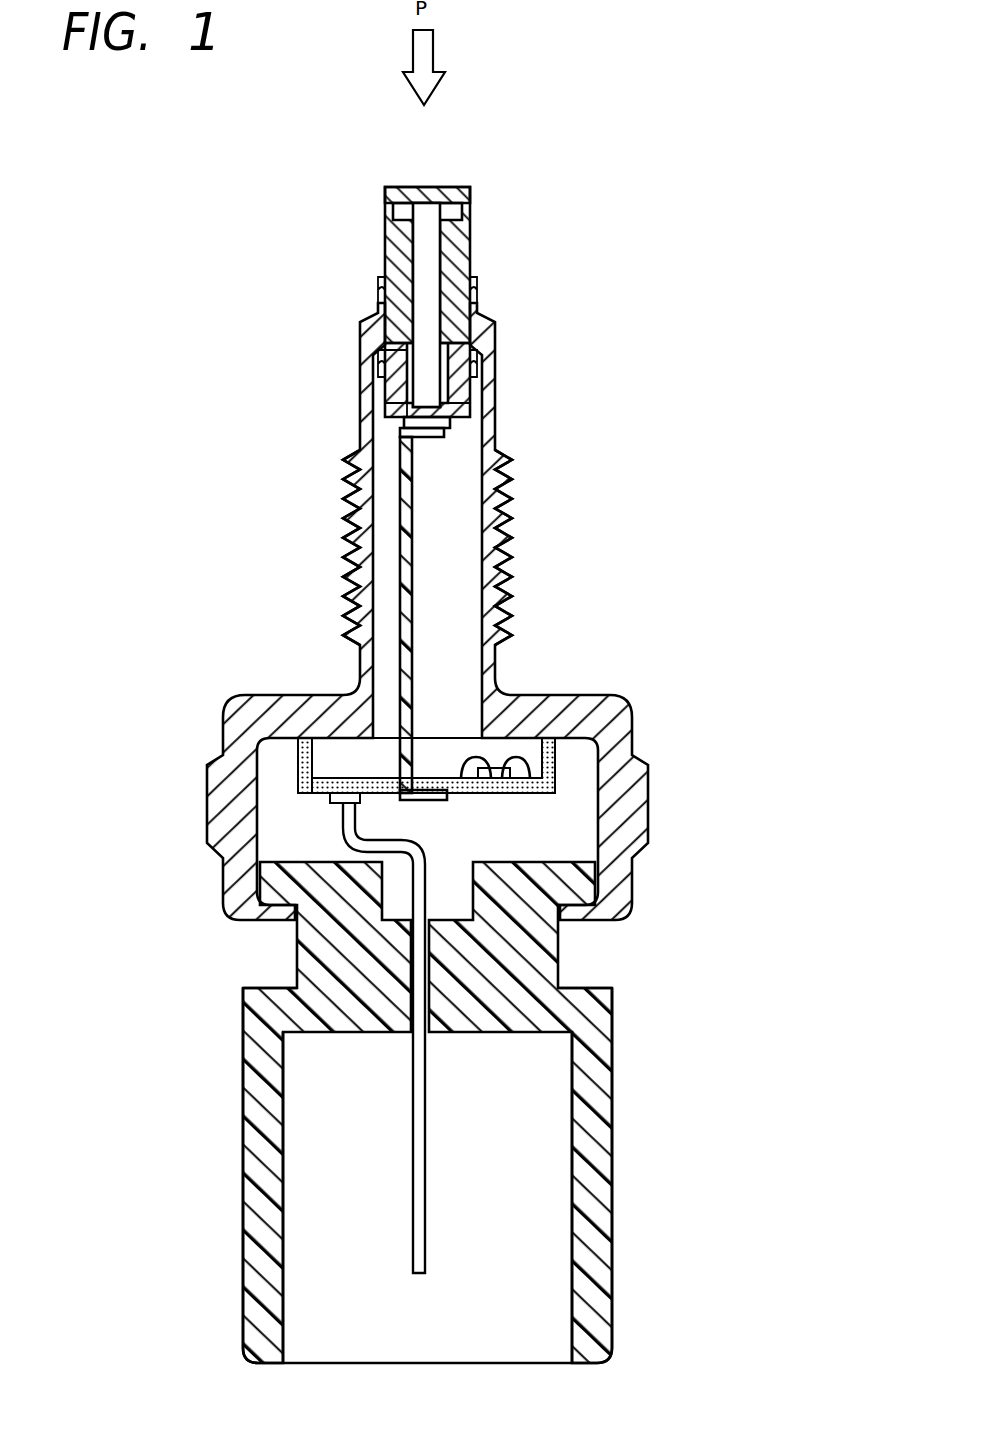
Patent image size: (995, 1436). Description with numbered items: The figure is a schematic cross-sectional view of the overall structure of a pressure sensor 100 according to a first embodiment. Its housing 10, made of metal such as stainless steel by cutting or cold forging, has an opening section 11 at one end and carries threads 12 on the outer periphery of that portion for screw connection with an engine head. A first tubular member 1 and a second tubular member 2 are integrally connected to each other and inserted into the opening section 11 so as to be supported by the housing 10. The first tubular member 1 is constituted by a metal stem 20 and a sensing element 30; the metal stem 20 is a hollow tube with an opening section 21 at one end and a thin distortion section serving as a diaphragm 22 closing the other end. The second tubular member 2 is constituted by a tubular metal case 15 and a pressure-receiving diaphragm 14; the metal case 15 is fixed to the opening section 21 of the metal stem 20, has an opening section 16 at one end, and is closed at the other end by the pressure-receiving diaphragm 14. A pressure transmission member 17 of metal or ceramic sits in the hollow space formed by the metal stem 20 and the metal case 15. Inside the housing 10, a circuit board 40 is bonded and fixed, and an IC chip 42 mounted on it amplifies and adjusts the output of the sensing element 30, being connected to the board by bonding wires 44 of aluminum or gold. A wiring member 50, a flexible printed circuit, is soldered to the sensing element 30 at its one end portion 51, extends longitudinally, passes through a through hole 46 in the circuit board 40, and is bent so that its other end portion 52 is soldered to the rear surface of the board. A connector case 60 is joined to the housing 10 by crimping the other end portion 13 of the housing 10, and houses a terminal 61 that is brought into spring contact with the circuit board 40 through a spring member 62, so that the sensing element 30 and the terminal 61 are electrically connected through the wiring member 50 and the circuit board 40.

The pressure sensor 100 is at (292, 183).
The first tubular member 1 is at (417, 394).
The second tubular member 2 is at (505, 253).
The housing 10 is at (630, 712).
The opening section 11 is at (478, 290).
The threads 12 is at (348, 510).
The other end portion 13 is at (228, 913).
The pressure-receiving diaphragm 14 is at (465, 210).
The metal case 15 is at (465, 248).
The opening section 16 is at (468, 382).
The pressure transmission member 17 is at (423, 263).
The metal stem 20 is at (398, 390).
The opening section 21 is at (446, 356).
The diaphragm 22 is at (442, 422).
The sensing element 30 is at (410, 422).
The circuit board 40 is at (300, 762).
The IC chip 42 is at (497, 768).
The bonding wires 44 is at (518, 758).
The through hole 46 is at (372, 788).
The wiring member (FPC) 50 is at (405, 575).
The one end portion 51 is at (425, 437).
The other end portion 52 is at (455, 805).
The connector case 60 is at (613, 1146).
The terminal 61 is at (426, 1256).
The spring member 62 is at (345, 812).